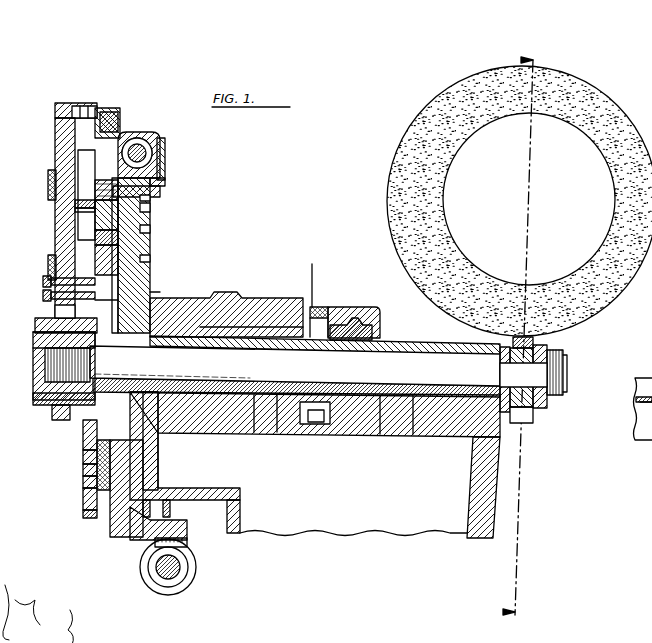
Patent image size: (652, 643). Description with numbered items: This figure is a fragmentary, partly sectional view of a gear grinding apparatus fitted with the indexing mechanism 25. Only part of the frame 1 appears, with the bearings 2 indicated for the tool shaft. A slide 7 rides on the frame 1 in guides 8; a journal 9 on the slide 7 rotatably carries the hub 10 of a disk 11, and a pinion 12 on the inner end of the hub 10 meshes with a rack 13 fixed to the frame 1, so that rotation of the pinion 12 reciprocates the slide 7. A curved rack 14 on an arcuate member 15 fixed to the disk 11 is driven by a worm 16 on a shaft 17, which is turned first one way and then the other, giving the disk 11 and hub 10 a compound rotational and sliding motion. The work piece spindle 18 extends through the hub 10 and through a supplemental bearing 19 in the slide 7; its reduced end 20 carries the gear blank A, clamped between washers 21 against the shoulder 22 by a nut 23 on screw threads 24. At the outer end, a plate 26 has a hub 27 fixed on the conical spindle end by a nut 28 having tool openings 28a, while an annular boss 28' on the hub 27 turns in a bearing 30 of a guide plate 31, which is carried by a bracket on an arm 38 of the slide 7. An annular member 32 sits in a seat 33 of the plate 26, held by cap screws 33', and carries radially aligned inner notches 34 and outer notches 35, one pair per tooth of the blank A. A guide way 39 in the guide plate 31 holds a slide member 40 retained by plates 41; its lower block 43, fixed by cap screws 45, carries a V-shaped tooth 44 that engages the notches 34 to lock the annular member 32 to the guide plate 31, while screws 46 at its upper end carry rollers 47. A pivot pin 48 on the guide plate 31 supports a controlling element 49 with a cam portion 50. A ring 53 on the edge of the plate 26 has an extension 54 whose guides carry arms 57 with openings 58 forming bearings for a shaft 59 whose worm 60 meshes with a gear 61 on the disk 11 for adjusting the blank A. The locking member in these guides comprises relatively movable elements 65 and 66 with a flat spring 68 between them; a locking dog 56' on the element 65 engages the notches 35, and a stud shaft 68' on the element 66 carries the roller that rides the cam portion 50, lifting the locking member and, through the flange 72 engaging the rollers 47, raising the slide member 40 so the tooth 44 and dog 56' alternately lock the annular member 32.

The frame 1 is at (397, 263).
The bearings 2 is at (509, 336).
The slide 7 is at (200, 296).
The guides 8 is at (380, 322).
The journal 9 is at (254, 438).
The hub 10 is at (275, 438).
The disk 11 is at (115, 512).
The pinion 12 is at (317, 425).
The rack 13 is at (320, 309).
The curved rack 14 is at (187, 545).
The arcuate member 15 is at (147, 542).
The worm 16 is at (178, 592).
The shaft 17 is at (164, 580).
The work piece spindle 18 is at (418, 453).
The supplemental bearing 19 is at (378, 440).
The reduced end 20 is at (565, 358).
The washers 21 is at (543, 413).
The shoulder 22 is at (500, 370).
The nut 23 is at (563, 395).
The screw threads 24 is at (567, 369).
The indexing mechanism 25 is at (56, 147).
The plate 26 is at (152, 292).
The hub 27 is at (144, 346).
The nut 28 is at (47, 366).
The annular boss 28' is at (47, 344).
The openings 28a is at (44, 390).
The bearing 30 is at (90, 440).
The guide plate 31 is at (62, 422).
The annular member 32 is at (150, 247).
The seat 33 is at (80, 465).
The cap screws 33' is at (61, 474).
The notches 34 is at (153, 260).
The notches 35 is at (92, 512).
The arm 38 is at (646, 442).
The guide way 39 is at (40, 203).
The slide member 40 is at (90, 192).
The plates 41 is at (48, 183).
The block 43 is at (72, 312).
The V-shaped tooth 44 is at (100, 303).
The cap screws 45 is at (43, 282).
The screws 46 is at (57, 140).
The rollers 47 is at (84, 106).
The pivot pin 48 is at (147, 236).
The controlling element 49 is at (152, 207).
The cam portion 50 is at (97, 200).
The ring 53 is at (150, 258).
The extension 54 is at (160, 190).
The locking dog 56' is at (166, 224).
The arms 57 is at (150, 134).
The openings 58 is at (134, 133).
The shaft 59 is at (163, 155).
The worm 60 is at (165, 142).
The gear 61 is at (165, 180).
The element 65 is at (140, 217).
The element 66 is at (115, 135).
The spring 68 is at (179, 190).
The stud shaft 68' is at (62, 203).
The flange 72 is at (108, 130).
The gear blank A is at (523, 418).